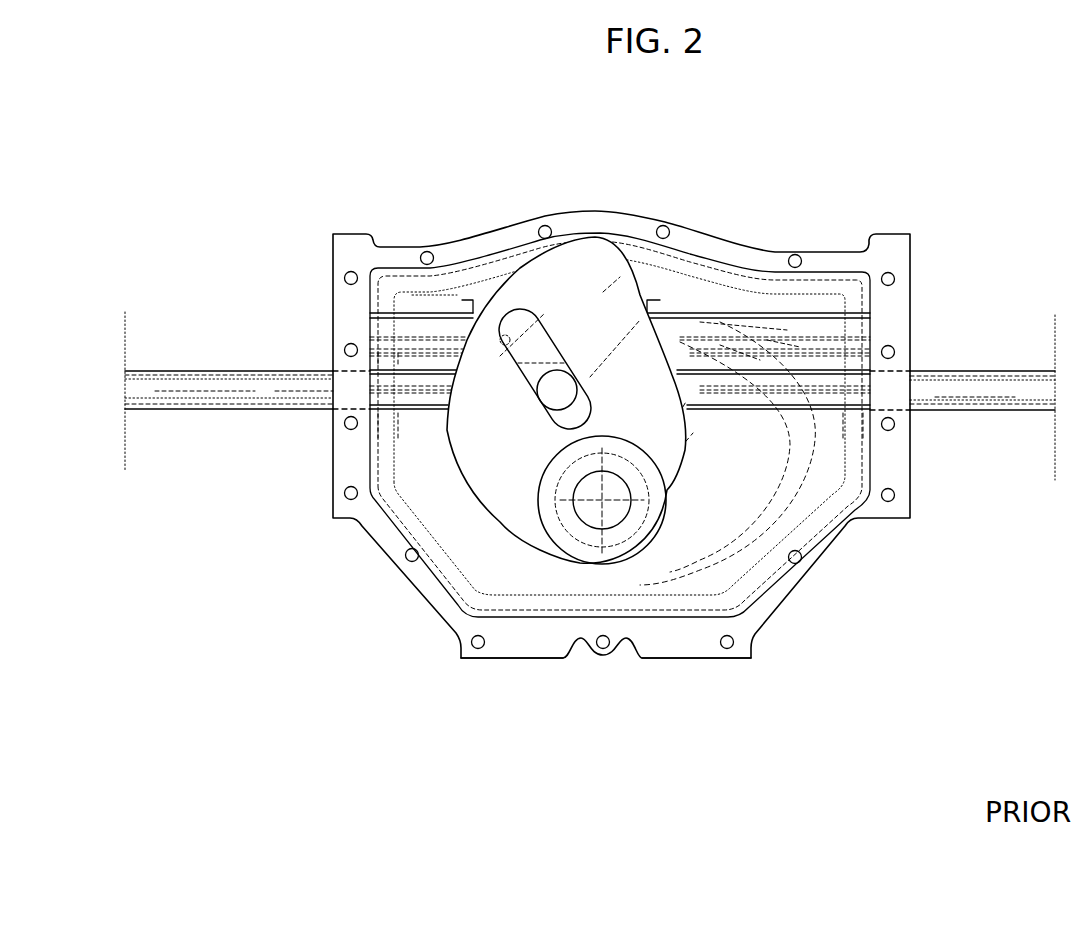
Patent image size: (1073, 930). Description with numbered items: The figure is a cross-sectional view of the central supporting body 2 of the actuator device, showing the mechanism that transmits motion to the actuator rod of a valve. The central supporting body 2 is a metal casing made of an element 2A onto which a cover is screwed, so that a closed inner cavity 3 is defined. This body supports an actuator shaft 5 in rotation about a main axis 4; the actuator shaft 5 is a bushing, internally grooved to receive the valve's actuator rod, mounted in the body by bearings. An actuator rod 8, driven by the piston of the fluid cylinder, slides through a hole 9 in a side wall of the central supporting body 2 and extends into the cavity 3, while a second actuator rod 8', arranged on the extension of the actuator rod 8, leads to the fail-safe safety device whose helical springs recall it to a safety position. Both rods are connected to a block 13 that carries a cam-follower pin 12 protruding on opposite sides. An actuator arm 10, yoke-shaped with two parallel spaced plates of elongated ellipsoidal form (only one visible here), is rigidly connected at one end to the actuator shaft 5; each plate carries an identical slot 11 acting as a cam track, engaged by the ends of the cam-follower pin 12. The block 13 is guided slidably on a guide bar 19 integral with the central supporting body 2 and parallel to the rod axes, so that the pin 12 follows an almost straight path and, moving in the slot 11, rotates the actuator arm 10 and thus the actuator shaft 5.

The central supporting body 2 is at (833, 160).
The element 2A is at (515, 657).
The inner cavity 3 is at (417, 510).
The main axis 4 is at (553, 549).
The actuator shaft 5 is at (603, 560).
The actuator rod 8 is at (962, 400).
The actuator rod 8' is at (247, 403).
The hole 9 is at (918, 365).
The actuator arm 10 is at (605, 255).
The slot 11 is at (512, 338).
The cam-follower pin 12 is at (583, 392).
The block 13 is at (537, 327).
The guide bar 19 is at (390, 325).